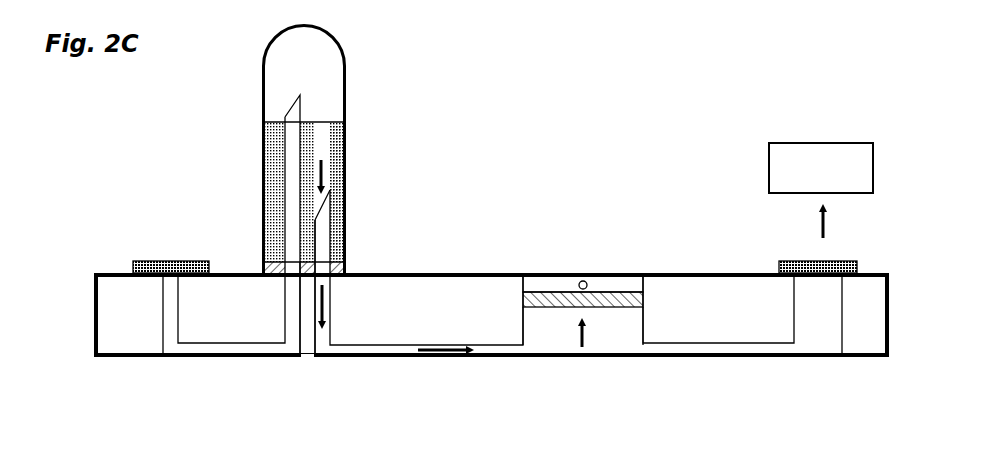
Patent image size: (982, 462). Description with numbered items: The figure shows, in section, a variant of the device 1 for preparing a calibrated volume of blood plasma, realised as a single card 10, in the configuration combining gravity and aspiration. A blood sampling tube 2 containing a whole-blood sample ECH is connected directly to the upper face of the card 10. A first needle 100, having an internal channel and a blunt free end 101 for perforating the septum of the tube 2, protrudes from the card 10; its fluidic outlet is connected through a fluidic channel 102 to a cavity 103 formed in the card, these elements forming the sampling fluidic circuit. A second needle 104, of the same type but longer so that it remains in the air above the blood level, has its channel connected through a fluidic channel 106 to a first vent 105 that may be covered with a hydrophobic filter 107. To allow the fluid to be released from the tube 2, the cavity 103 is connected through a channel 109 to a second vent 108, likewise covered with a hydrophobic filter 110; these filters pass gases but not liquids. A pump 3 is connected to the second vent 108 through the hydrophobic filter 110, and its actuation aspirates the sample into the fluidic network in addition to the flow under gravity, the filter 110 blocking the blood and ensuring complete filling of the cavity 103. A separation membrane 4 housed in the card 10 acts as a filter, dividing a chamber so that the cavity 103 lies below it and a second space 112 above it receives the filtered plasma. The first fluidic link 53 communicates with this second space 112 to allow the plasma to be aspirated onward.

The device for preparing the calibrated volume of blood plasma 1 is at (95, 290).
The card 10 is at (110, 322).
The tube 2 is at (263, 88).
The blood sample ECH is at (327, 147).
The second needle 104 is at (292, 197).
The first needle 100 is at (322, 238).
The blunt free end 101 is at (332, 190).
The first vent 105 is at (172, 283).
The hydrophobic filter 107 is at (147, 265).
The fluidic channel 106 is at (238, 352).
The fluidic channel 102 is at (402, 352).
The cavity 103 is at (603, 333).
The separation membrane 4 is at (550, 300).
The first fluidic link 53 is at (583, 280).
The second space 112 is at (613, 285).
The channel 109 is at (755, 347).
The second vent 108 is at (817, 288).
The hydrophobic filter 110 is at (845, 258).
The pump 3 is at (821, 190).